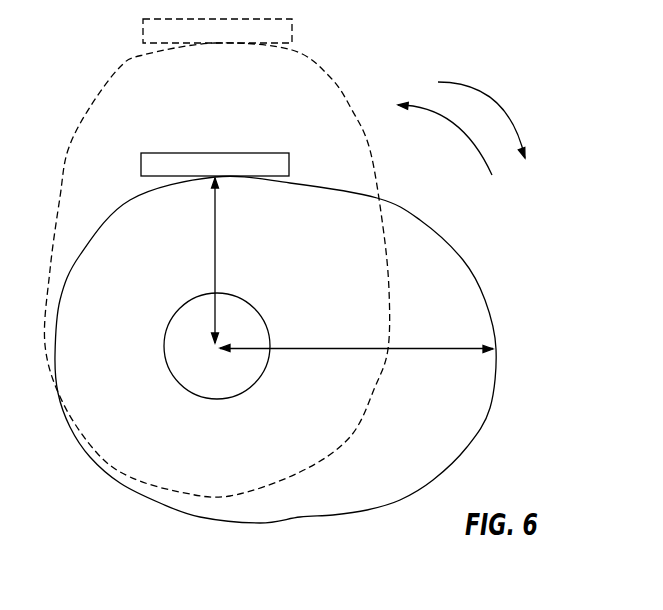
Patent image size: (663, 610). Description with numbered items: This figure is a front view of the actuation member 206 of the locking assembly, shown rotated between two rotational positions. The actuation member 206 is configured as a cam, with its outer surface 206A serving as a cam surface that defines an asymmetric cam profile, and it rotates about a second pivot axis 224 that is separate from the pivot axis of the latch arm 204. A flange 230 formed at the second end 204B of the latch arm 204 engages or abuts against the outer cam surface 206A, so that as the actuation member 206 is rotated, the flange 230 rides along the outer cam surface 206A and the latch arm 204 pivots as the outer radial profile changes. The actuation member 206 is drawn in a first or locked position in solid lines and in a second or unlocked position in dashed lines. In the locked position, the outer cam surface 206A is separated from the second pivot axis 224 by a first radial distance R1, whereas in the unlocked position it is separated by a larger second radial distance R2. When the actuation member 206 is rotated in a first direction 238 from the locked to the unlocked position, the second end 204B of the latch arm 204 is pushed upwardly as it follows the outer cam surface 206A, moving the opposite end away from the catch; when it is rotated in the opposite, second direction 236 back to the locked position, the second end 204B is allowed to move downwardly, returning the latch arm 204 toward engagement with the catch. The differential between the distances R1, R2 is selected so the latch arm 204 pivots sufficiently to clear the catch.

The latch arm 204 is at (170, 153).
The second end of the latch arm 204B is at (233, 160).
The flange 230 is at (289, 164).
The actuation member 206 is at (342, 482).
The outer surface of the actuation member 206A is at (490, 408).
The second pivot axis 224 is at (216, 346).
The first radial distance R1 is at (215, 258).
The second radial distance R2 is at (468, 352).
The second direction 236 is at (480, 92).
The first direction 238 is at (462, 130).